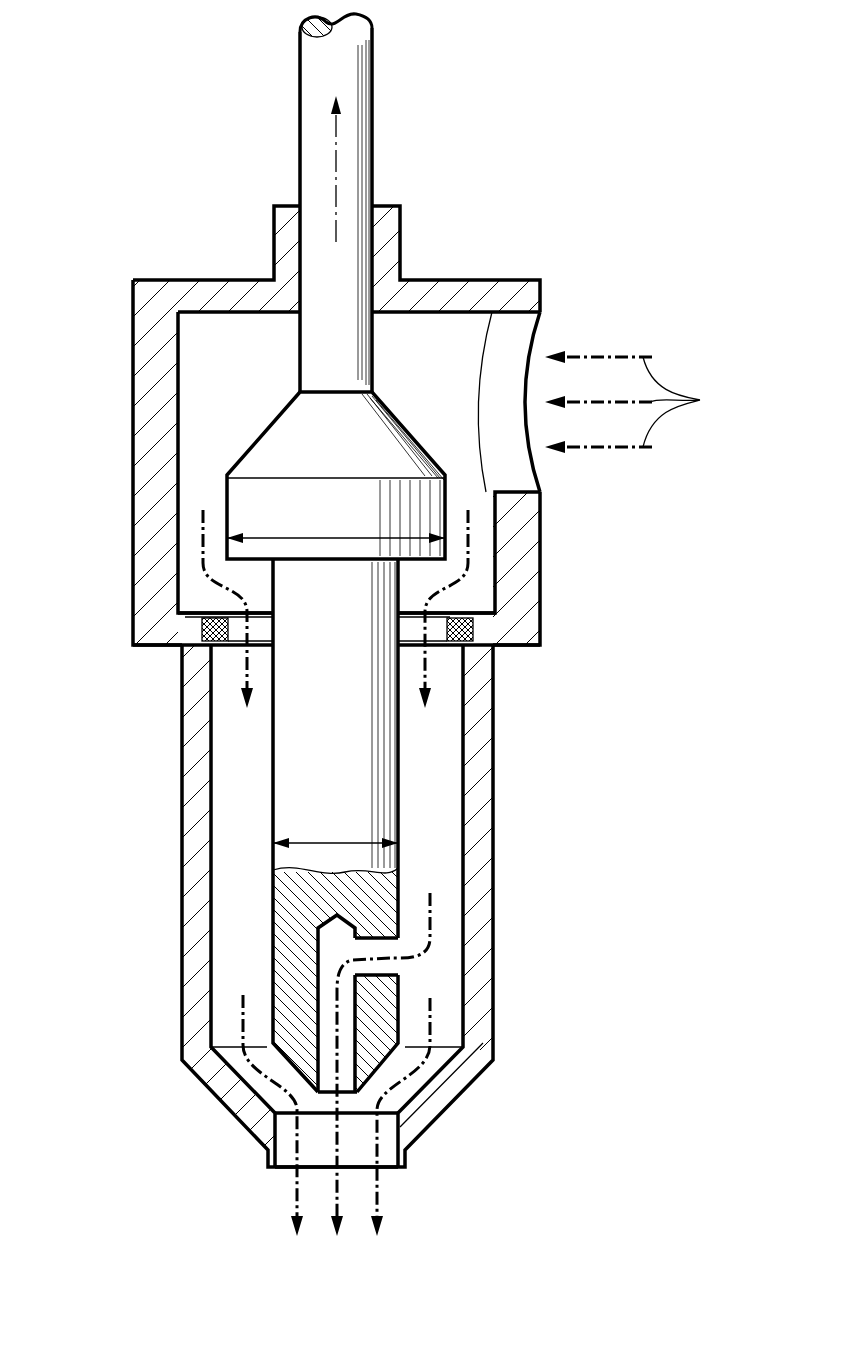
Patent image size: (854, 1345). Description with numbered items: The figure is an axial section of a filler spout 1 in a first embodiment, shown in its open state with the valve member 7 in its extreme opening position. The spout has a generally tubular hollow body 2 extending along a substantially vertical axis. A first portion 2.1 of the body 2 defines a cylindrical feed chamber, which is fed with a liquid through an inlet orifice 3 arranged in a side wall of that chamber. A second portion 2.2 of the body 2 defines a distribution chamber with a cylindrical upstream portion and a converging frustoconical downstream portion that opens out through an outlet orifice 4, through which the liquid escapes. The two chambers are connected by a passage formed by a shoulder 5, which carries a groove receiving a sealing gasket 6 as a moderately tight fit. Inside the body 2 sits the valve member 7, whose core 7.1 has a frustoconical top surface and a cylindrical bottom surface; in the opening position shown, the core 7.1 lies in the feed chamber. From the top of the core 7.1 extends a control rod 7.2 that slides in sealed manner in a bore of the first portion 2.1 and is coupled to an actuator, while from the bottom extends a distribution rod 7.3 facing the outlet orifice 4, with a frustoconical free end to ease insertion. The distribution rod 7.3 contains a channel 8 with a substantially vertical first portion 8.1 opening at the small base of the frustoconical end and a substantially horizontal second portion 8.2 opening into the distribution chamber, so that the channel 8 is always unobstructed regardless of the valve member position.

The filler spout 1 is at (397, 625).
The body 2 is at (332, 703).
The first portion of the body 2.1 is at (133, 372).
The second portion of the body 2.2 is at (180, 850).
The inlet orifice 3 is at (525, 481).
The outlet orifice 4 is at (398, 1153).
The shoulder 5 is at (465, 612).
The sealing gasket 6 is at (472, 627).
The valve member 7 is at (320, 553).
The core 7.1 is at (258, 452).
The control rod 7.2 is at (300, 78).
The distribution rod 7.3 is at (272, 927).
The channel 8 is at (320, 1003).
The first portion of the channel 8.1 is at (328, 1013).
The second portion of the channel 8.2 is at (353, 945).